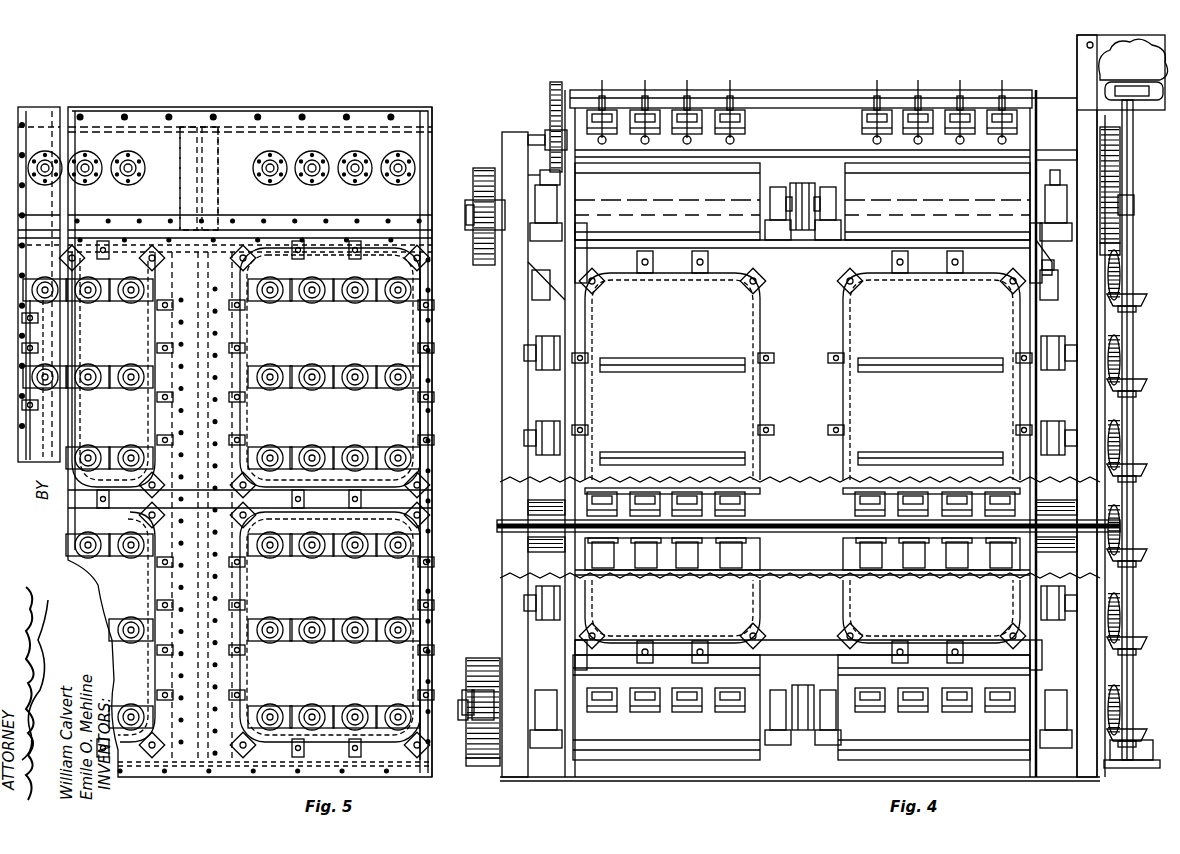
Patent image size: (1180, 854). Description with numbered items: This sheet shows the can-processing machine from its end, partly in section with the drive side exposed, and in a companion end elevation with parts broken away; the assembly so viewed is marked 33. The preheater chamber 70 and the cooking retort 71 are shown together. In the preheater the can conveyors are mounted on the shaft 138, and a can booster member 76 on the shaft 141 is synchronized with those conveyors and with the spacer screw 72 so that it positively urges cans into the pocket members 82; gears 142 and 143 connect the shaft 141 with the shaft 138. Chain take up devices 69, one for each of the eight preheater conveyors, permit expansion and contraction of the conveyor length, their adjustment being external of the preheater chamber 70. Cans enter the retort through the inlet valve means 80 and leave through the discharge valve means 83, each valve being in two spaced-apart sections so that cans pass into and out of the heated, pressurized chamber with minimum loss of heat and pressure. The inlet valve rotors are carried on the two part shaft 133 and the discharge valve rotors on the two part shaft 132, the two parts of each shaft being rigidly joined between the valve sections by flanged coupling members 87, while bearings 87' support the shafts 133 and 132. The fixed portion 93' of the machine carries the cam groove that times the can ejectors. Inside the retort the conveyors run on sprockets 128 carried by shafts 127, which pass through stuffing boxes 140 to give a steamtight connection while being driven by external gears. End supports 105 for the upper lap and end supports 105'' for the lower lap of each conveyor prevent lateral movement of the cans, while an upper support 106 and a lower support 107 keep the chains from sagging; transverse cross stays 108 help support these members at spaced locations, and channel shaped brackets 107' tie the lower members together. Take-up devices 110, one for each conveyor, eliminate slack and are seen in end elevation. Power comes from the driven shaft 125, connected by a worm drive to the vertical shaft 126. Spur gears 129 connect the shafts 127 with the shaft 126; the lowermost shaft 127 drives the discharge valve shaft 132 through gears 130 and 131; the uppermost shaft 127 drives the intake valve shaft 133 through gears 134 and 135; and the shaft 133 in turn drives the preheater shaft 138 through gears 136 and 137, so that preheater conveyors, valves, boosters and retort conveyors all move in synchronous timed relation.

In FIG. 5, the roller conveyor section 33 is at (235, 103).
In FIG. 4, the roller conveyor section 33 is at (785, 72).
In FIG. 5, the chain take up devices 69 is at (60, 175).
In FIG. 5, the preheater chamber 70 is at (437, 162).
In FIG. 4, the preheater chamber 70 is at (1036, 133).
In FIG. 5, the cooking retort 71 is at (441, 433).
In FIG. 4, the cooking retort 71 is at (1040, 322).
In FIG. 4, the spacer screw 72 is at (727, 145).
In FIG. 4, the can booster member 76 is at (684, 84).
In FIG. 4, the inlet valve means 80 is at (740, 228).
In FIG. 4, the pocket members 82 is at (725, 492).
In FIG. 4, the discharge valve means 83 is at (690, 747).
In FIG. 4, the flanged coupling members 87 is at (802, 451).
In FIG. 4, the bearings 87' is at (803, 457).
In FIG. 4, the fixed portion of the machine 93' is at (798, 436).
In FIG. 4, the end supports 105 is at (801, 437).
In FIG. 4, the end supports for lower lap 105'' is at (802, 554).
In FIG. 4, the upper support 106 is at (752, 527).
In FIG. 4, the lower support 107 is at (667, 571).
In FIG. 4, the channel shaped brackets 107' is at (936, 571).
In FIG. 4, the transverse cross stays 108 is at (790, 548).
In FIG. 5, the take-up devices 110 is at (352, 303).
In FIG. 4, the driven shaft 125 is at (1165, 62).
In FIG. 4, the vertical shaft 126 is at (1135, 120).
In FIG. 4, the shafts 127 is at (535, 285).
In FIG. 4, the sprockets 128 is at (607, 560).
In FIG. 4, the spur gears 129 is at (1140, 380).
In FIG. 4, the gear 130 is at (480, 656).
In FIG. 4, the gear 131 is at (478, 767).
In FIG. 4, the two part shaft 132 is at (470, 718).
In FIG. 4, the two part shaft 133 is at (503, 198).
In FIG. 4, the gear 134 is at (482, 268).
In FIG. 4, the gear 135 is at (480, 165).
In FIG. 4, the gear 136 is at (1122, 235).
In FIG. 4, the gear 137 is at (1122, 135).
In FIG. 4, the shaft 138 is at (1060, 155).
In FIG. 4, the stuffing boxes 140 is at (546, 372).
In FIG. 4, the shaft 141 is at (860, 105).
In FIG. 4, the gear 142 is at (556, 80).
In FIG. 4, the gear 143 is at (552, 132).